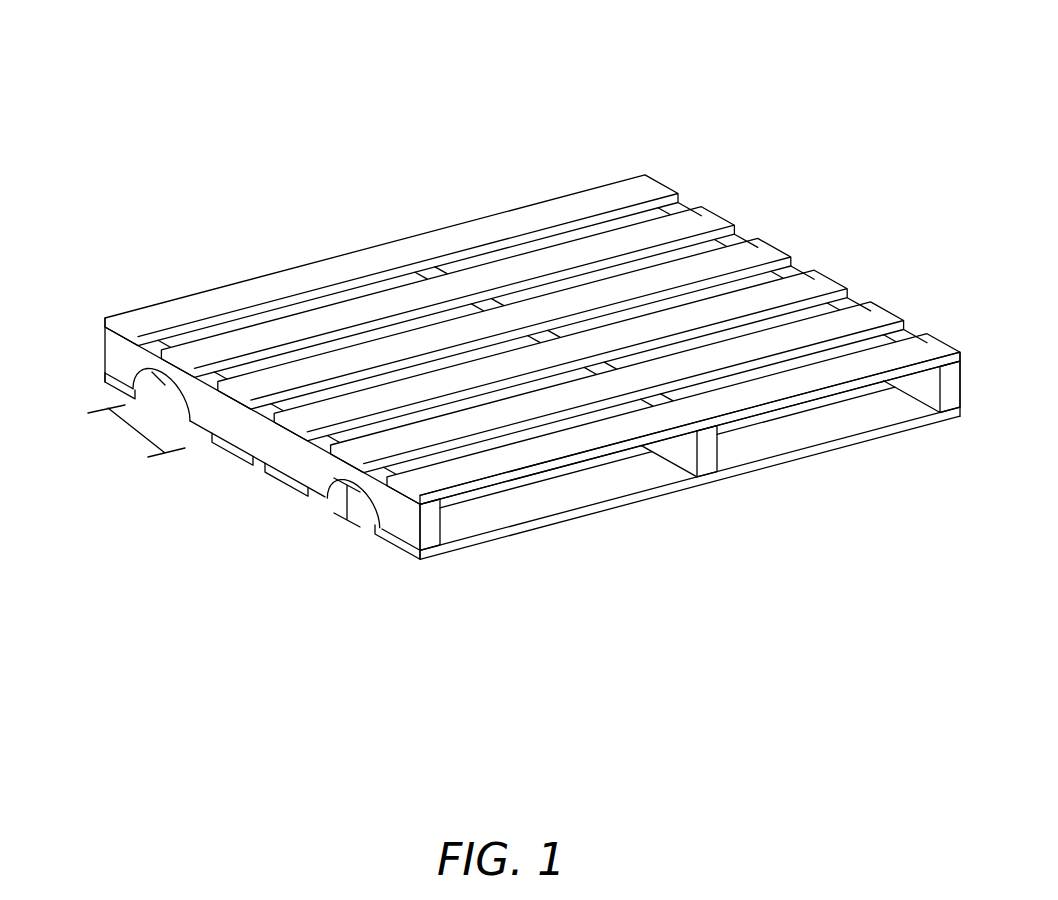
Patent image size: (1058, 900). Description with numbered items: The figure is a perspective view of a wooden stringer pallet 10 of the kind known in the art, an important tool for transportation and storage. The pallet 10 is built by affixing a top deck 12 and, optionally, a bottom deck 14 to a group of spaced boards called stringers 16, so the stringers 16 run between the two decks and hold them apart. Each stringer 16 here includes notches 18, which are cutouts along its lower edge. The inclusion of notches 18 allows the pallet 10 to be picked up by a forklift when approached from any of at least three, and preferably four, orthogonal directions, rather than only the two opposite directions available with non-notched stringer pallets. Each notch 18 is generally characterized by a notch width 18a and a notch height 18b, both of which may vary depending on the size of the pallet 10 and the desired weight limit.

The stringer pallet 10 is at (765, 117).
The top deck 12 is at (520, 294).
The bottom deck 14 is at (648, 535).
The stringer 16 is at (242, 436).
The notch 18 is at (330, 480).
The notch width 18a is at (127, 428).
The notch height 18b is at (325, 497).